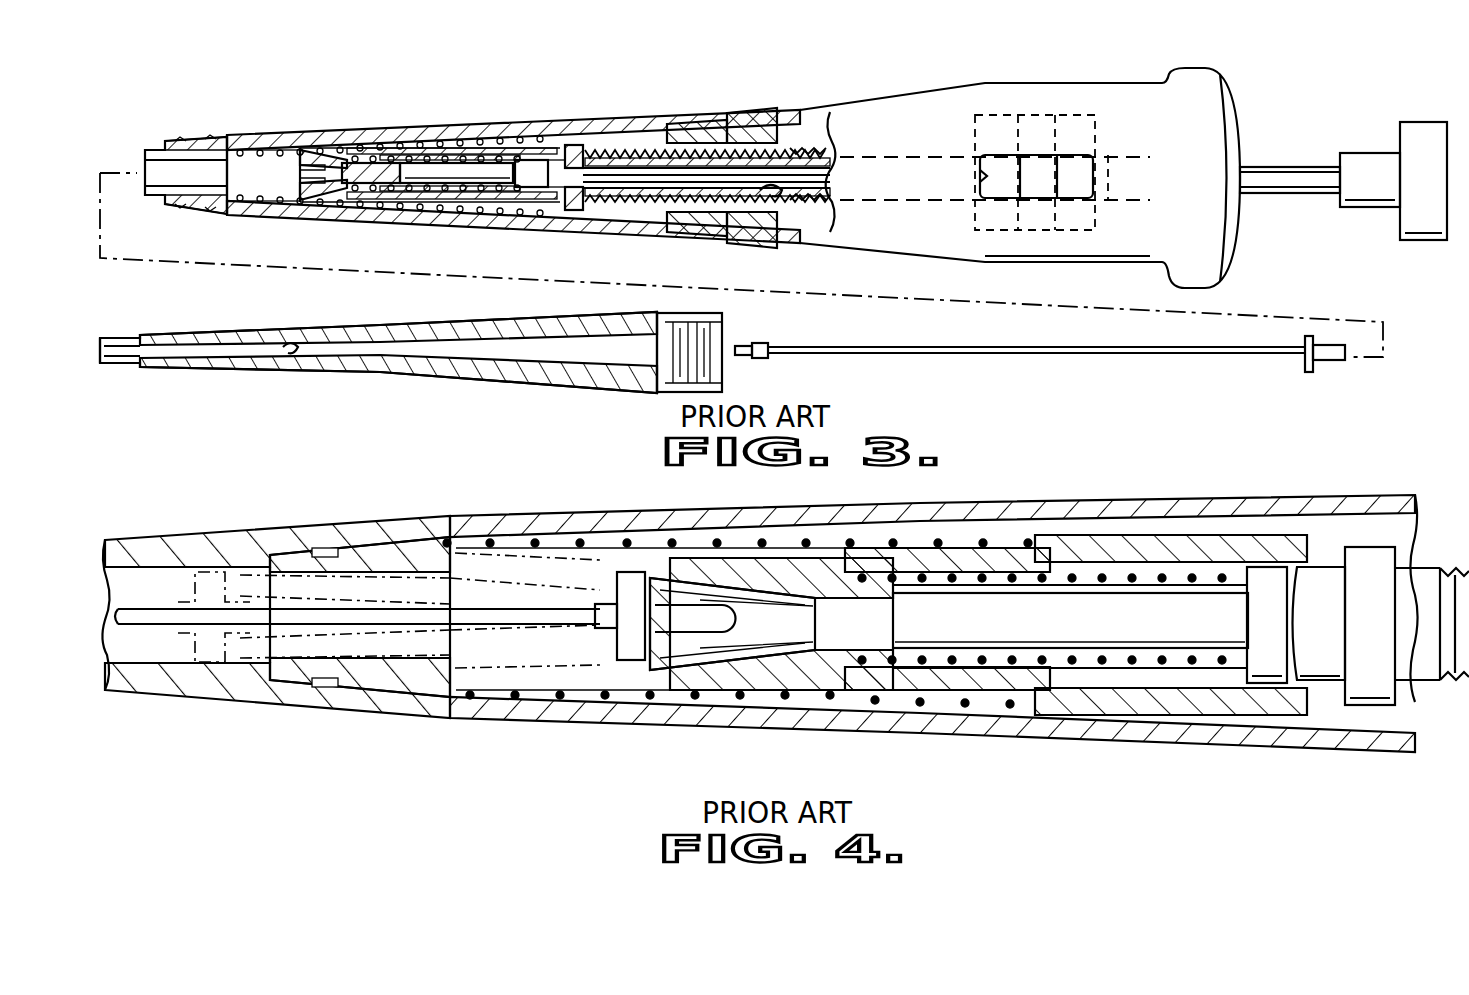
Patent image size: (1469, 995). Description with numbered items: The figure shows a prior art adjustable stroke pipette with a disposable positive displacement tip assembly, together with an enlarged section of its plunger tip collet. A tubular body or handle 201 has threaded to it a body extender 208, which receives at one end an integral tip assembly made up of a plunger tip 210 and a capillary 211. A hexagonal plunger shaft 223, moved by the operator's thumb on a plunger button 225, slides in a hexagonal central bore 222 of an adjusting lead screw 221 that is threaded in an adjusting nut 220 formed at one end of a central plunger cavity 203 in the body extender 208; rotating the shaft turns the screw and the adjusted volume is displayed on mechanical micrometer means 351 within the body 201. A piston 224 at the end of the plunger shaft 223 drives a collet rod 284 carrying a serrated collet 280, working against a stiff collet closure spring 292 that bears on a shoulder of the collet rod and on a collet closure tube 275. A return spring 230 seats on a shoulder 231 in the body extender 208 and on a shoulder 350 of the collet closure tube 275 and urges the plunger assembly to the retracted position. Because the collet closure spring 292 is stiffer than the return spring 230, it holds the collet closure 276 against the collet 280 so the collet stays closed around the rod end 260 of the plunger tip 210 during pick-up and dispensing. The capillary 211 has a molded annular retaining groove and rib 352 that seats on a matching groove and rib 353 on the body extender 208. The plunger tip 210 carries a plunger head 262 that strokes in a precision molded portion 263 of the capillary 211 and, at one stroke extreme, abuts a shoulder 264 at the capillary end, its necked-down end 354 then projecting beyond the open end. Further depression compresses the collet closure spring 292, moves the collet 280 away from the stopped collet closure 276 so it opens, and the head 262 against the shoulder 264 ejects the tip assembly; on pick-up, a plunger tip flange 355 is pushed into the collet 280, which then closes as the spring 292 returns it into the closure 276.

In FIG. 3, the tubular body or handle 201 is at (905, 95).
In FIG. 3, the central plunger cavity 203 is at (274, 160).
In FIG. 3, the body extender 208 is at (665, 120).
In FIG. 4, the body extender 208 is at (1097, 512).
In FIG. 3, the plunger tip 210 is at (1005, 360).
In FIG. 4, the plunger tip 210 is at (487, 622).
In FIG. 3, the capillary 211 is at (355, 375).
In FIG. 4, the capillary 211 is at (177, 533).
In FIG. 3, the adjusting nut 220 is at (735, 125).
In FIG. 3, the adjusting lead screw 221 is at (808, 150).
In FIG. 4, the adjusting lead screw 221 is at (1440, 566).
In FIG. 3, the hexagonal central bore 222 is at (780, 196).
In FIG. 3, the plunger shaft 223 is at (1285, 170).
In FIG. 3, the piston 224 is at (578, 160).
In FIG. 4, the piston 224 is at (1320, 568).
In FIG. 3, the plunger button 225 is at (1425, 125).
In FIG. 3, the return spring 230 is at (393, 198).
In FIG. 4, the return spring 230 is at (987, 545).
In FIG. 3, the shoulder 231 is at (232, 140).
In FIG. 4, the shoulder 231 is at (448, 540).
In FIG. 3, the rod end 260 is at (1332, 360).
In FIG. 4, the rod end 260 is at (675, 628).
In FIG. 3, the plunger head 262 is at (770, 356).
In FIG. 3, the precision molded portion 263 is at (290, 350).
In FIG. 3, the shoulder 264 is at (170, 348).
In FIG. 3, the collet closure tube 275 is at (520, 208).
In FIG. 4, the collet closure tube 275 is at (1098, 715).
In FIG. 3, the collet closure 276 is at (338, 148).
In FIG. 4, the collet closure 276 is at (772, 565).
In FIG. 3, the serrated collet 280 is at (298, 200).
In FIG. 4, the serrated collet 280 is at (708, 662).
In FIG. 3, the collet rod 284 is at (440, 162).
In FIG. 4, the collet rod 284 is at (1074, 632).
In FIG. 3, the collet closure spring 292 is at (475, 205).
In FIG. 4, the collet closure spring 292 is at (1172, 576).
In FIG. 3, the shoulder 350 is at (525, 160).
In FIG. 3, the mechanical micrometer means 351 is at (1045, 150).
In FIG. 3, the annular retaining groove and rib 352 is at (675, 380).
In FIG. 4, the annular retaining groove and rib 352 is at (360, 708).
In FIG. 3, the annular retaining groove and rib 353 is at (182, 138).
In FIG. 4, the annular retaining groove and rib 353 is at (330, 552).
In FIG. 3, the necked-down end 354 is at (745, 346).
In FIG. 3, the plunger tip flange 355 is at (1308, 372).
In FIG. 4, the plunger tip flange 355 is at (625, 660).